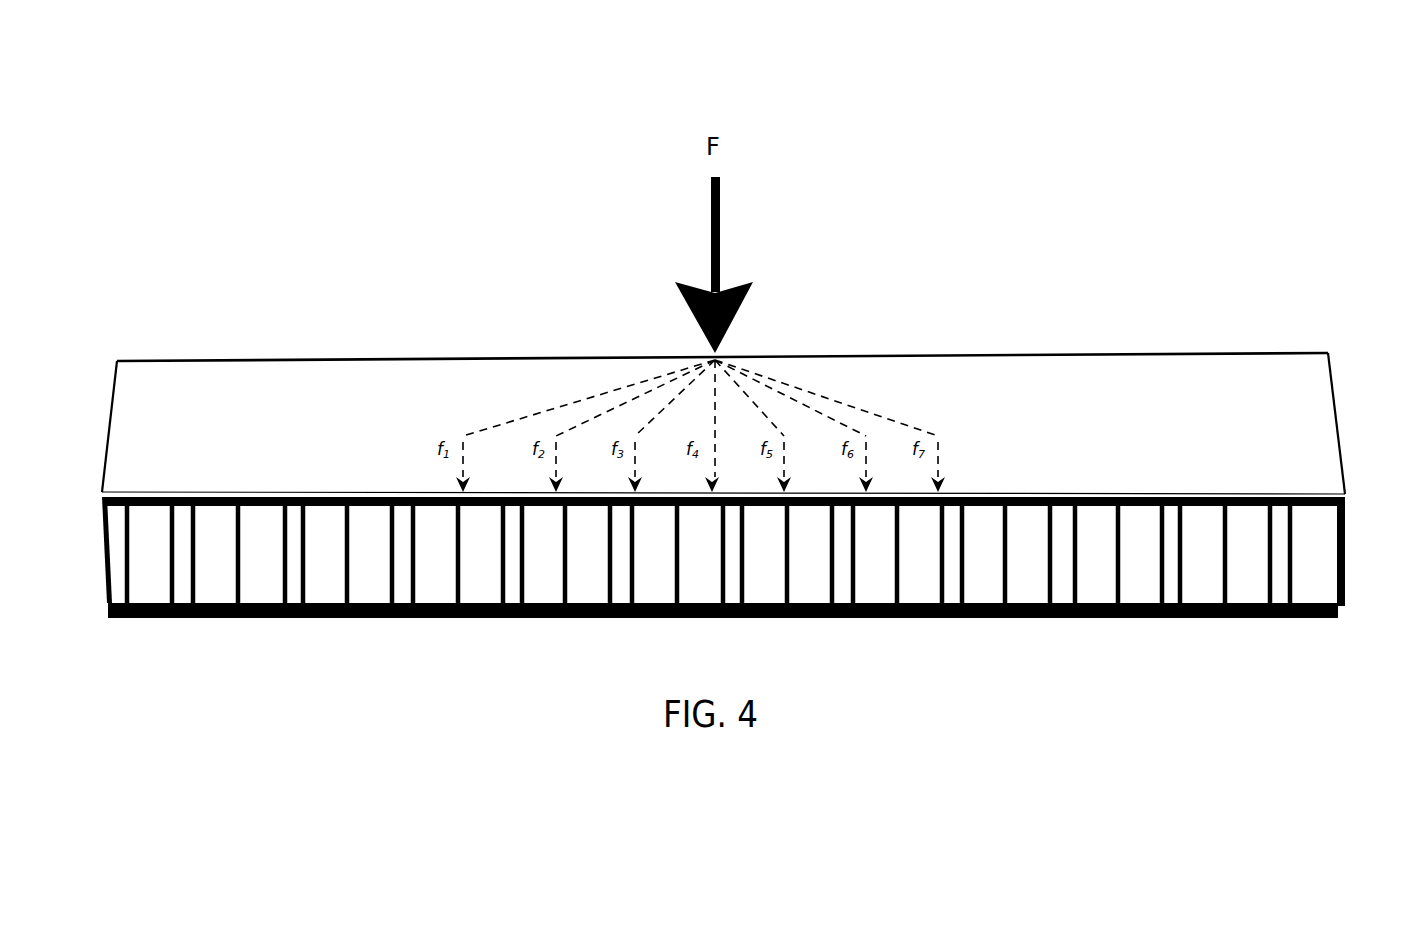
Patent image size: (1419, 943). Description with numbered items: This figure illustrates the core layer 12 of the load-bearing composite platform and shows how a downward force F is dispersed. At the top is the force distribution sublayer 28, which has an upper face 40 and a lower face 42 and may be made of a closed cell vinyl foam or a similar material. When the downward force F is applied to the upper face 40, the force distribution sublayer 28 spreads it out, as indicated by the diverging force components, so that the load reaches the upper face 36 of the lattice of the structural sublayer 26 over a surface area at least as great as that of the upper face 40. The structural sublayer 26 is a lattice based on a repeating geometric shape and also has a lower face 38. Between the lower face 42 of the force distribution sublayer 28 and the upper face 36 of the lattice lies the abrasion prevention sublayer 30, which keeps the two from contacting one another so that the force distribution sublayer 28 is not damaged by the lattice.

The core layer 12 is at (256, 95).
The force distribution sublayer 28 is at (305, 365).
The upper face of the force distribution sublayer 40 is at (1240, 350).
The abrasion prevention sublayer 30 is at (103, 503).
The upper face of the lattice 36 is at (158, 507).
The lower face of the force distribution sublayer 42 is at (1312, 505).
The structural sublayer 26 is at (1343, 585).
The lower face of the lattice 38 is at (1028, 618).